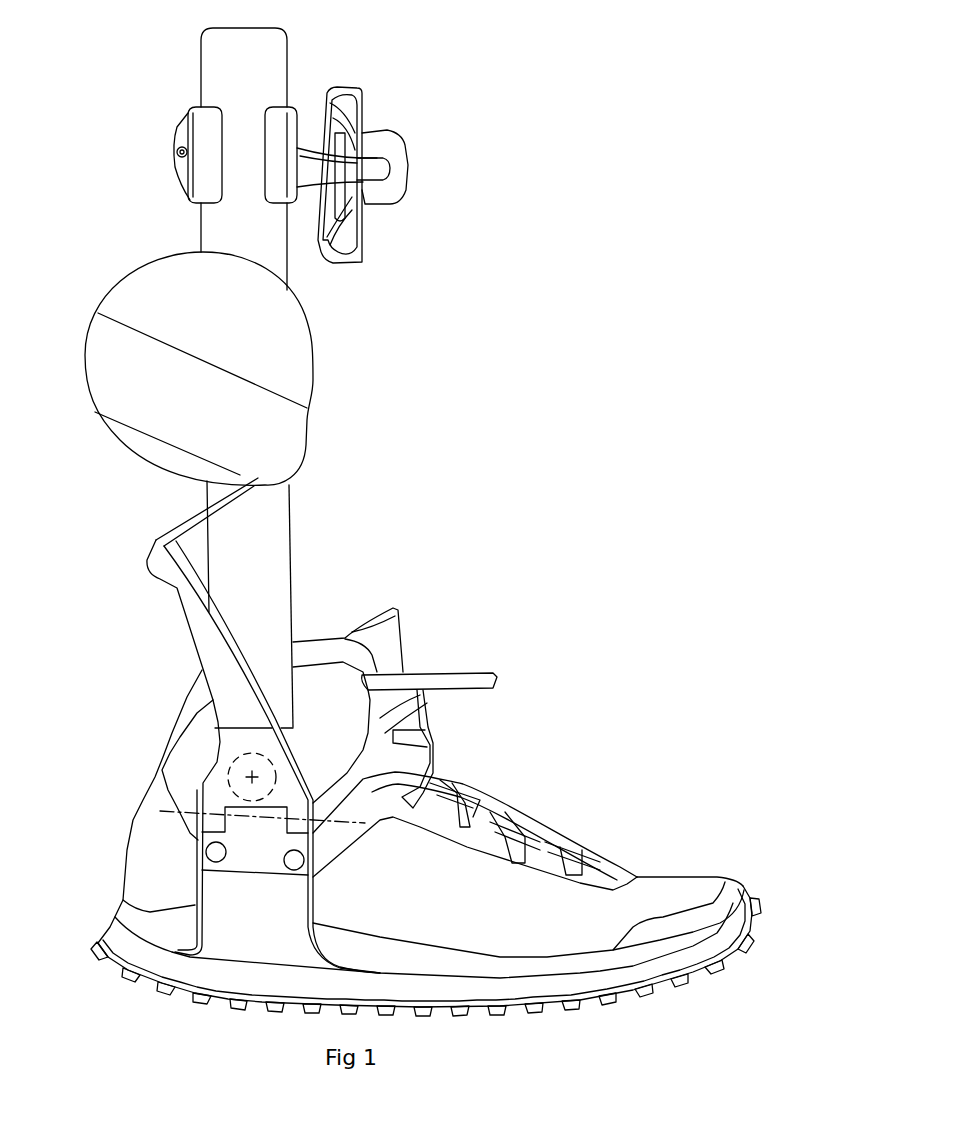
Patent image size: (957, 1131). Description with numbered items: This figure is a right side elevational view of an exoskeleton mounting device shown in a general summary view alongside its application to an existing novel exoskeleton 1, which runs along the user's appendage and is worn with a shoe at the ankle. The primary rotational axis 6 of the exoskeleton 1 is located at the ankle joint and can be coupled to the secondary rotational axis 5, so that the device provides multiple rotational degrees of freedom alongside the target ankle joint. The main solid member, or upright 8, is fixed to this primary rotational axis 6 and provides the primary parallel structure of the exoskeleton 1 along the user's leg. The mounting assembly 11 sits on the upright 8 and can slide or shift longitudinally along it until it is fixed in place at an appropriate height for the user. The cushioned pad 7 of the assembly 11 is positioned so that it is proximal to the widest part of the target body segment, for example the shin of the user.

The exoskeleton 1 is at (410, 515).
The secondary rotational axis 5 is at (160, 811).
The primary rotational axis 6 is at (230, 772).
The cushioned pad 7 is at (362, 243).
The upright 8 is at (265, 63).
The assembly 11 is at (418, 147).